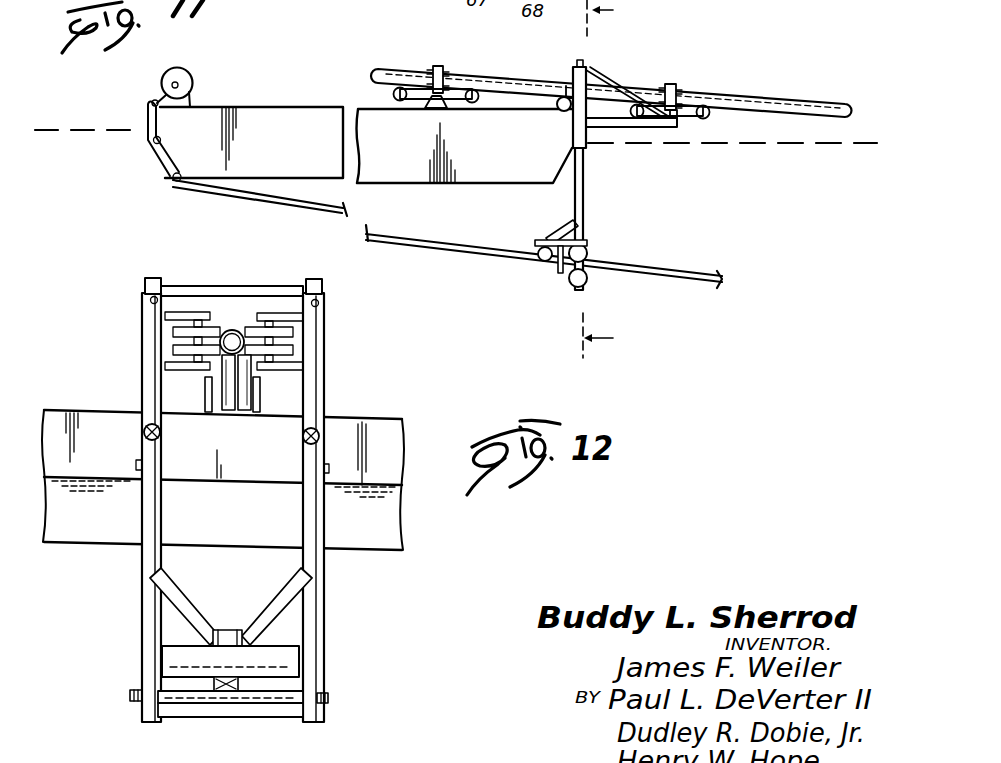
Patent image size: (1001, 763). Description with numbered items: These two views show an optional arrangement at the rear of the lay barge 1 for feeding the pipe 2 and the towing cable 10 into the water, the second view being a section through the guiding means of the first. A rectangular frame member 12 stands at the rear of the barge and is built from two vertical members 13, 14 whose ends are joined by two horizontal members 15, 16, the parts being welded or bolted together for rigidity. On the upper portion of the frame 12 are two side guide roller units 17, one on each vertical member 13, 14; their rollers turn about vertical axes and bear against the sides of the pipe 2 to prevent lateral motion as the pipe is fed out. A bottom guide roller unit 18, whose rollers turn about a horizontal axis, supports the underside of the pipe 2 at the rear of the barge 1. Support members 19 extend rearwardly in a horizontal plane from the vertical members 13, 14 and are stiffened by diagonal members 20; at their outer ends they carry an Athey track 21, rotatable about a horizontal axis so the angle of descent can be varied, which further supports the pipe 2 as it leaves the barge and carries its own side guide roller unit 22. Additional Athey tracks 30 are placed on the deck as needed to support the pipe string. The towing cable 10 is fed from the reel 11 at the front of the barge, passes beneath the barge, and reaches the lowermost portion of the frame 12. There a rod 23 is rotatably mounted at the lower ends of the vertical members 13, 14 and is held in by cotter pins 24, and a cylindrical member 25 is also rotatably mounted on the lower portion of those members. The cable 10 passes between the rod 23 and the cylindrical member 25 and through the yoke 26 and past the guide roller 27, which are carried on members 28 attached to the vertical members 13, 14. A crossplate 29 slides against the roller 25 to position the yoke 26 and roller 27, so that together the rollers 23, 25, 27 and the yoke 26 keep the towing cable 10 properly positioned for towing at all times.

In FIG. 11, the lay barge 1 is at (268, 117).
In FIG. 12, the lay barge 1 is at (383, 458).
In FIG. 11, the pipe 2 is at (778, 102).
In FIG. 11, the towing cable 10 is at (162, 173).
In FIG. 11, the reel 11 is at (183, 68).
In FIG. 11, the rectangular frame member 12 is at (590, 189).
In FIG. 12, the rectangular frame member 12 is at (137, 282).
In FIG. 12, the vertical member 13 is at (316, 606).
In FIG. 11, the vertical member 14 is at (583, 203).
In FIG. 12, the vertical member 14 is at (146, 625).
In FIG. 12, the horizontal member 15 is at (210, 718).
In FIG. 12, the horizontal member 16 is at (234, 288).
In FIG. 11, the side guide roller unit 17 is at (573, 78).
In FIG. 12, the side guide roller unit 17 is at (197, 340).
In FIG. 11, the bottom guide roller unit 18 is at (557, 104).
In FIG. 12, the bottom guide roller unit 18 is at (210, 383).
In FIG. 11, the support member 19 is at (623, 128).
In FIG. 12, the support member 19 is at (324, 434).
In FIG. 11, the diagonal member 20 is at (588, 73).
In FIG. 12, the diagonal member 20 is at (318, 304).
In FIG. 11, the Athey track 21 is at (688, 116).
In FIG. 11, the side guide roller unit 22 is at (673, 85).
In FIG. 12, the rod 23 is at (262, 700).
In FIG. 12, the cotter pin 24 is at (329, 684).
In FIG. 12, the cylindrical member 25 is at (278, 647).
In FIG. 11, the yoke 26 is at (562, 275).
In FIG. 12, the yoke 26 is at (211, 685).
In FIG. 11, the guide roller 27 is at (533, 251).
In FIG. 11, the member 28 is at (558, 224).
In FIG. 12, the member 28 is at (278, 596).
In FIG. 11, the crossplate 29 is at (534, 242).
In FIG. 12, the crossplate 29 is at (225, 640).
In FIG. 11, the Athey track 30 is at (378, 96).